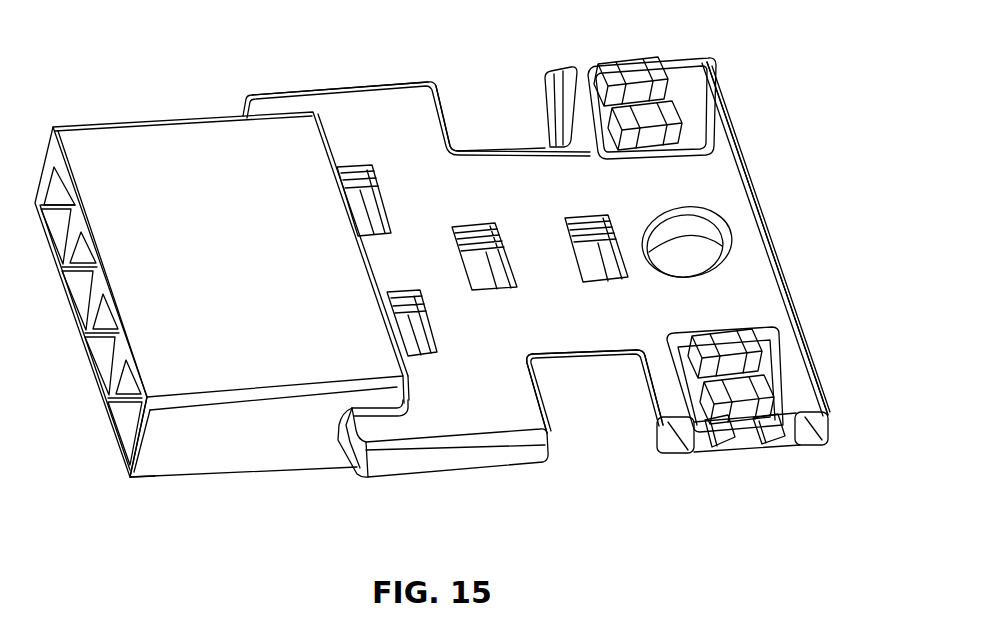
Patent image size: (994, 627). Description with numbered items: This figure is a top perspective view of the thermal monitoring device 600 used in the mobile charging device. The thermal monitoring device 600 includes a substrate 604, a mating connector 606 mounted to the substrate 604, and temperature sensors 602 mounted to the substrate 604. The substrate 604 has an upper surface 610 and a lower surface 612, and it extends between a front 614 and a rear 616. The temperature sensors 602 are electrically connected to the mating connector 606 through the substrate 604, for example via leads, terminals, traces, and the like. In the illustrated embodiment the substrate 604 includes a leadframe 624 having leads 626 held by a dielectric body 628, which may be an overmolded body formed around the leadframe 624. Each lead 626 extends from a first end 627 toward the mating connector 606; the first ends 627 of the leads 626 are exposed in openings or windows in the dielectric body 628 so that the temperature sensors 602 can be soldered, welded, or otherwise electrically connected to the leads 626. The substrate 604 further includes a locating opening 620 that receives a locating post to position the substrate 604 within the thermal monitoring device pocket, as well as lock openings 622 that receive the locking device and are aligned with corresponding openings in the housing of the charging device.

The thermal monitoring device 600 is at (162, 42).
The temperature sensors 602 is at (655, 66).
The substrate 604 is at (720, 185).
The mating connector 606 is at (85, 404).
The upper surface 610 is at (455, 473).
The lower surface 612 is at (462, 420).
The front 614 is at (122, 463).
The rear 616 is at (788, 283).
The locating opening 620 is at (710, 243).
The lock openings 622 is at (460, 92).
The leadframe 624 is at (492, 248).
The leads 626 is at (593, 73).
The first end 627 is at (830, 432).
The dielectric body 628 is at (388, 97).